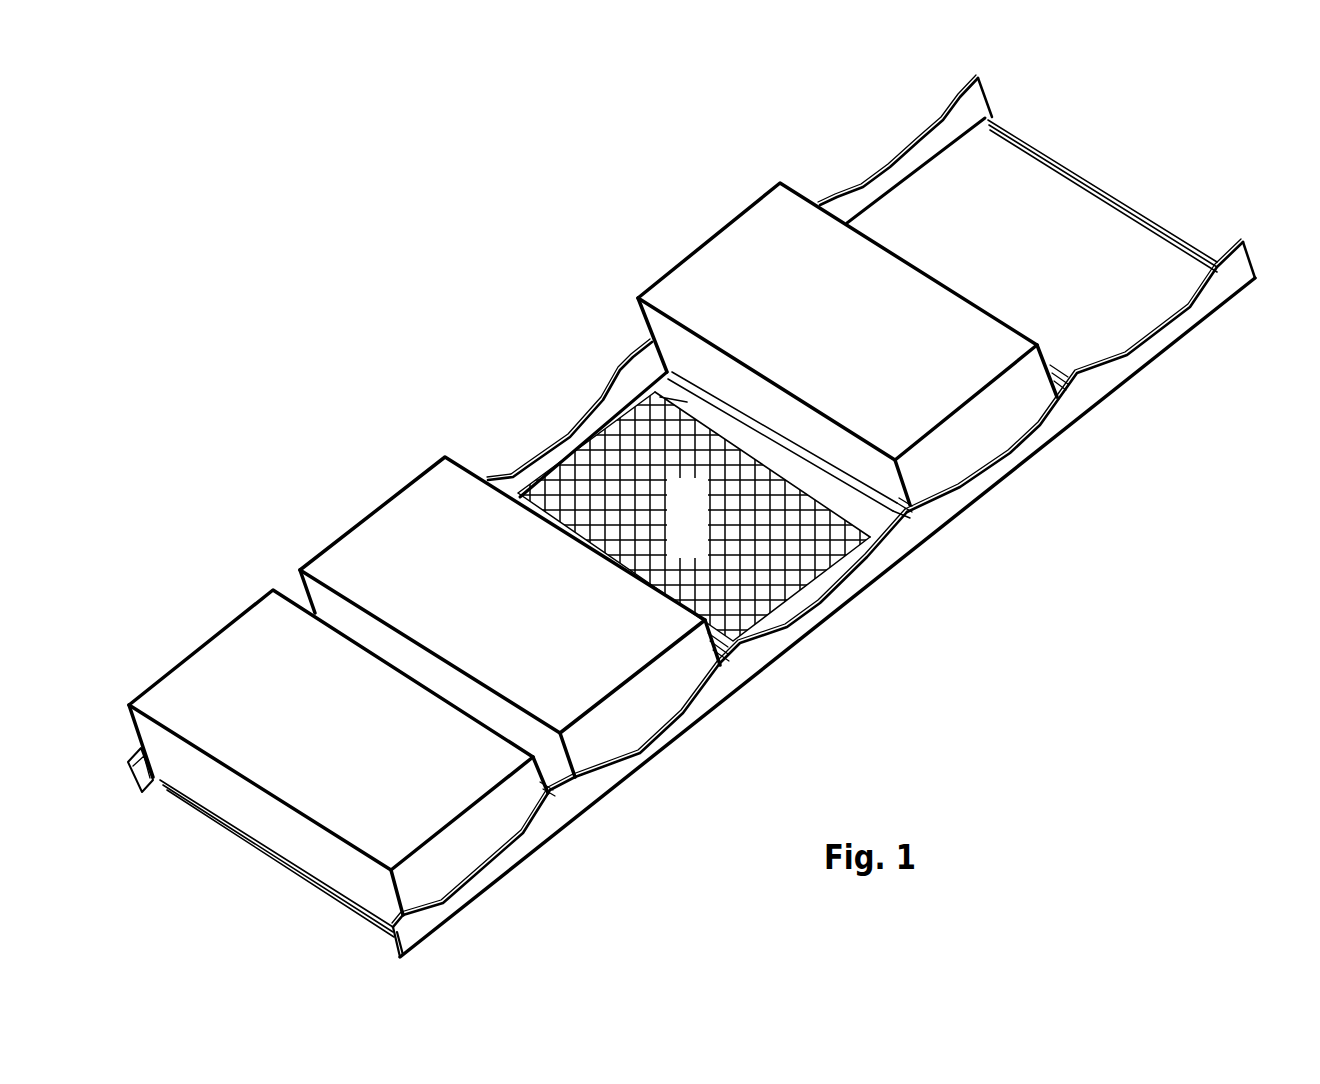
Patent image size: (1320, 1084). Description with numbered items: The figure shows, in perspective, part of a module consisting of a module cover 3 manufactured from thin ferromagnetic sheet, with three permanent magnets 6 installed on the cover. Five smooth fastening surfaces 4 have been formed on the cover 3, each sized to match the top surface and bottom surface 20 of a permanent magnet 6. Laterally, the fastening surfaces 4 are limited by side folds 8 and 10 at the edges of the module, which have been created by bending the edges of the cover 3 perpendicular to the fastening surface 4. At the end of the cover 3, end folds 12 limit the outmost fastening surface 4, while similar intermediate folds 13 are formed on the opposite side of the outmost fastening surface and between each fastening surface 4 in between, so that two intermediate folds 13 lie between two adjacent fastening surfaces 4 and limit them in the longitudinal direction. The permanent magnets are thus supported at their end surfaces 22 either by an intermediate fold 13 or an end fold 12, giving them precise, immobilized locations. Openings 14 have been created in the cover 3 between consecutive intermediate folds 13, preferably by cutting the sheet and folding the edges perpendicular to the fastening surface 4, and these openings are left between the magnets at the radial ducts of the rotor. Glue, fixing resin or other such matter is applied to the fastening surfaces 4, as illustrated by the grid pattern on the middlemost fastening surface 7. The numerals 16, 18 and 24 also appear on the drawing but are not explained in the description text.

The module cover 3 is at (1178, 212).
The fastening surface 4 is at (1083, 323).
The permanent magnet 6 is at (612, 505).
The middlemost fastening surface 7 is at (696, 533).
The side fold 8 is at (1080, 400).
The side fold 10 is at (867, 203).
The end fold 12 is at (1033, 148).
The intermediate fold 13 is at (850, 460).
The opening 14 is at (657, 388).
The wave trough 16 is at (653, 743).
The wave crest 18 is at (567, 787).
The bottom surface 20 is at (882, 330).
The end surface 22 is at (900, 513).
The side face of box 24 is at (957, 437).